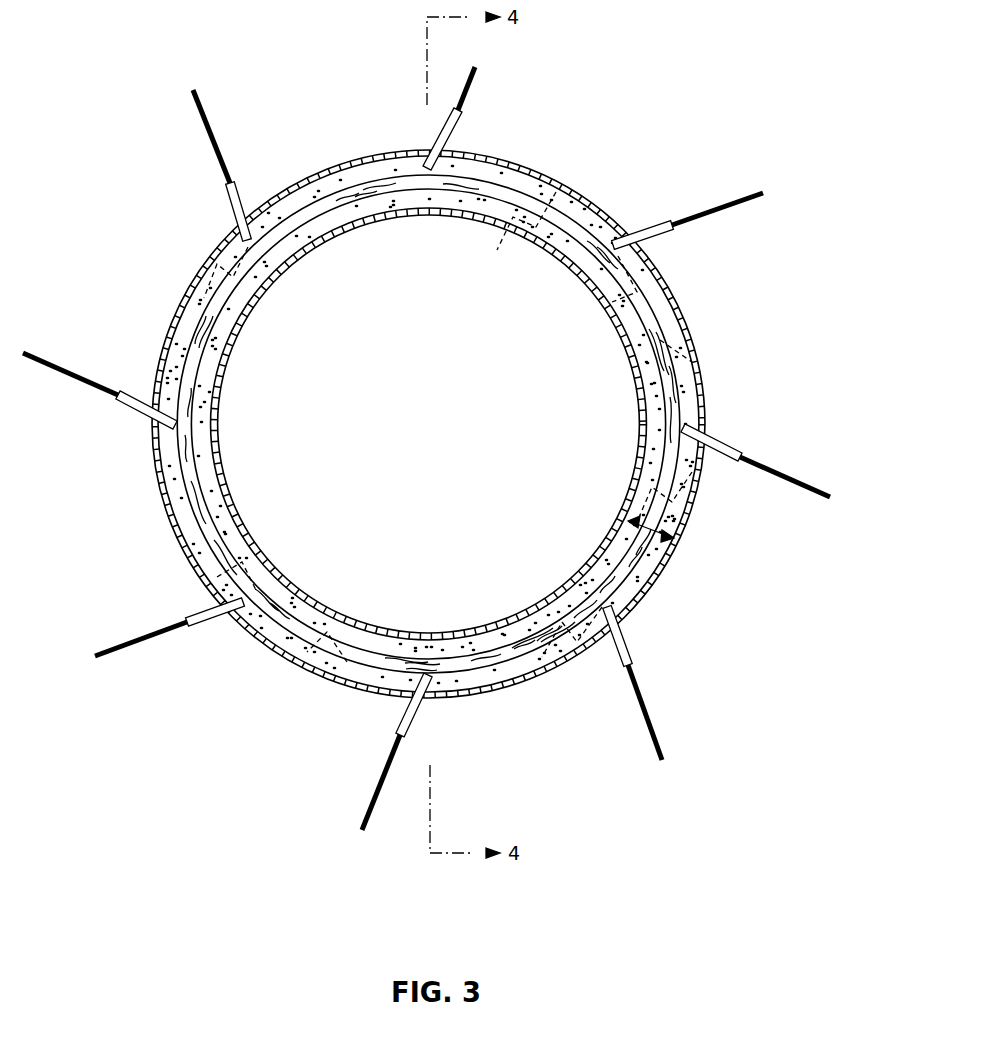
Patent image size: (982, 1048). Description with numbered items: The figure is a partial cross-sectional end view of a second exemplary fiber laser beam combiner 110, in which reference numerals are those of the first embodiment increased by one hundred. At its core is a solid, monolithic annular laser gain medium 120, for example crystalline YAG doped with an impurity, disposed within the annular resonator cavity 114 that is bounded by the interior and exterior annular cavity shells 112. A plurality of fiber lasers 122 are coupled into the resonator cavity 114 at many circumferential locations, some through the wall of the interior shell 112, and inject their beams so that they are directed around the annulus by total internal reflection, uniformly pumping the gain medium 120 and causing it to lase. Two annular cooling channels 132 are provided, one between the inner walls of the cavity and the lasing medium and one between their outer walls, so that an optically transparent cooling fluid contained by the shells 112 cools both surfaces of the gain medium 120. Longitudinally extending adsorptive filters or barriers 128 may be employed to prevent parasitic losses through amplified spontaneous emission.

The second exemplary embodiment of fiber laser beam combiner 110 is at (426, 443).
The annular cavity shell 112 is at (692, 292).
The annular resonator cavity 114 is at (662, 522).
The annular laser gain medium 120 is at (200, 303).
The fiber laser 122 is at (215, 134).
The filter or barrier 128 is at (513, 200).
The annular cooling channel 132 is at (226, 472).